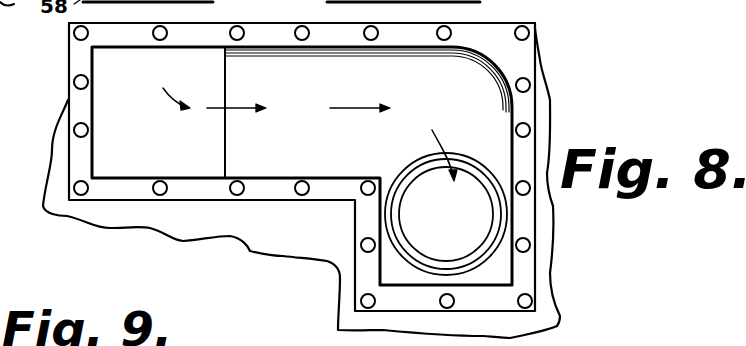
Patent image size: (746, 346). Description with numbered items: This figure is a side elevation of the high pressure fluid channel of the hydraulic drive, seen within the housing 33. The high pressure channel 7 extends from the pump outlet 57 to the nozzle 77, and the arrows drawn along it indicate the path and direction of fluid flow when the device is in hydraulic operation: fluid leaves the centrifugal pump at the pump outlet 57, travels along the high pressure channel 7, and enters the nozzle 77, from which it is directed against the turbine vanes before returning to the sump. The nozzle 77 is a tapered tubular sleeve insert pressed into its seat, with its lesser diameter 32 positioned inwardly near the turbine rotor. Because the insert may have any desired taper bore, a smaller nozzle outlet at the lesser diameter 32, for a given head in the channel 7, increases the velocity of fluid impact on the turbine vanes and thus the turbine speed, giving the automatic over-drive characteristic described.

The high pressure channel 7 is at (288, 147).
The lesser diameter 32 is at (452, 256).
The housing 33 is at (480, 27).
The pump outlet 57 is at (113, 107).
The nozzle 77 is at (445, 203).